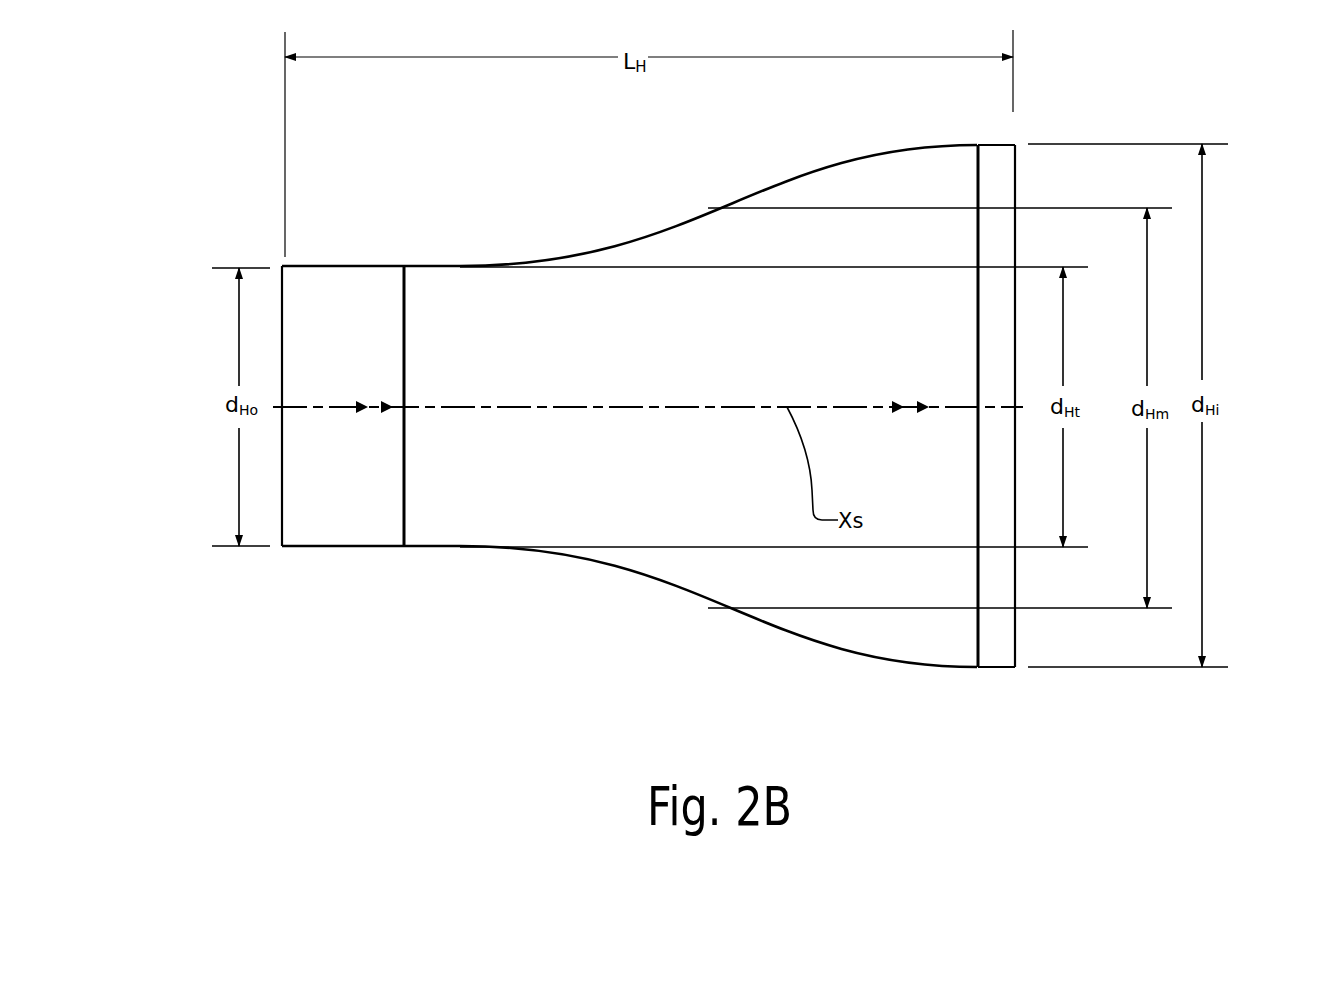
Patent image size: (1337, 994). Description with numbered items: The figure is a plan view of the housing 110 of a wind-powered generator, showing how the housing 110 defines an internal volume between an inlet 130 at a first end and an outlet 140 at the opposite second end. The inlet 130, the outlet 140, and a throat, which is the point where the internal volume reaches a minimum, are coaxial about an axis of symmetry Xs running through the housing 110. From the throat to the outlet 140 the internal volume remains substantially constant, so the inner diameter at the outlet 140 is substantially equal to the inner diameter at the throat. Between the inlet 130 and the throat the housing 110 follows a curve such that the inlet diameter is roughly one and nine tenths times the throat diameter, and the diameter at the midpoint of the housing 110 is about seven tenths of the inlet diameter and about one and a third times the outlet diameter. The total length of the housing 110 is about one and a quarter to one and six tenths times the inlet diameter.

The housing 110 is at (483, 693).
The inlet 130 is at (1071, 694).
The outlet 140 is at (265, 575).